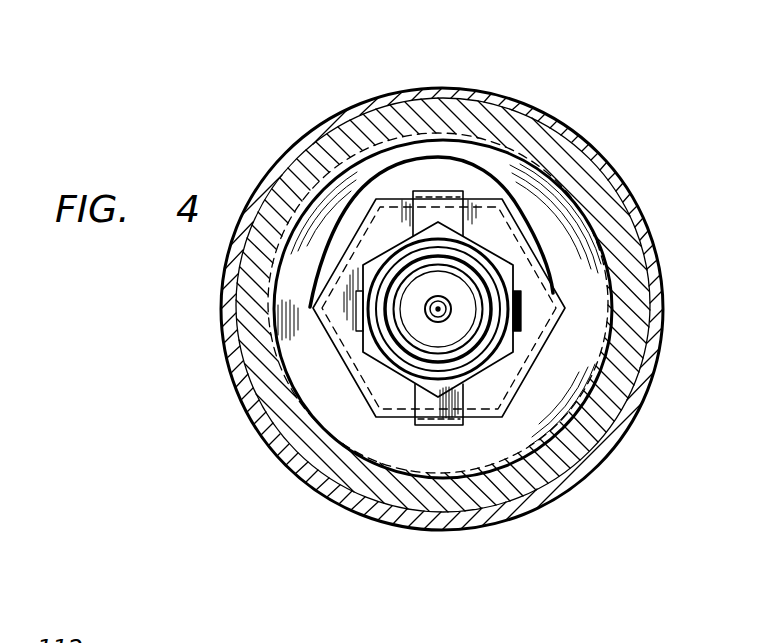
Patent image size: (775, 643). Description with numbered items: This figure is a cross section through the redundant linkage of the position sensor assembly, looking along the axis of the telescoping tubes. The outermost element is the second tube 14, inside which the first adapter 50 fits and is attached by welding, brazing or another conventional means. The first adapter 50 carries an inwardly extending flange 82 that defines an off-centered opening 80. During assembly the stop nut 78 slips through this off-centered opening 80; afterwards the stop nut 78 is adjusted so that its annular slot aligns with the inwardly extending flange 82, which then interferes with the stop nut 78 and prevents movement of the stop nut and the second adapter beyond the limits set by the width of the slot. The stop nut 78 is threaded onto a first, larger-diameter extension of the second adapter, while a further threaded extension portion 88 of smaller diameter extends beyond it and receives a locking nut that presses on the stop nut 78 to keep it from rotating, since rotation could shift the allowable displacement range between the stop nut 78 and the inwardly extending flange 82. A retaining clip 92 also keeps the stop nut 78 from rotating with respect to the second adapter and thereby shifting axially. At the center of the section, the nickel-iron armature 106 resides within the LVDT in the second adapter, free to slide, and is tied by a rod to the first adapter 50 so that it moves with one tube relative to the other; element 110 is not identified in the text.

The second tube 14 is at (656, 278).
The first adapter 50 is at (524, 100).
The inwardly extending flange 82 is at (570, 226).
The off-centered opening 80 is at (424, 158).
The retaining clip 92 is at (453, 402).
The stop nut 78 is at (313, 320).
The further threaded extension portion 88 is at (393, 327).
The nickel-iron armature 106 is at (427, 332).
The center pin 110 is at (438, 320).